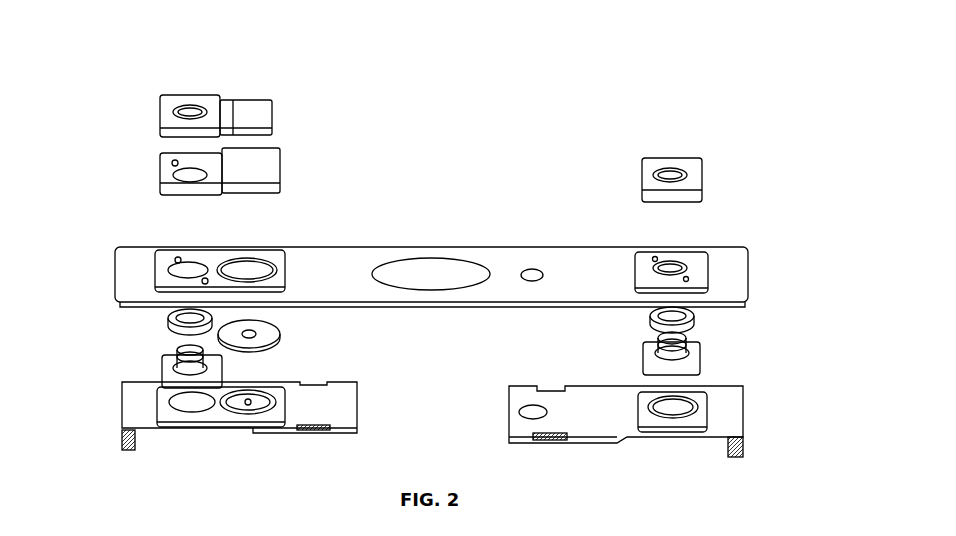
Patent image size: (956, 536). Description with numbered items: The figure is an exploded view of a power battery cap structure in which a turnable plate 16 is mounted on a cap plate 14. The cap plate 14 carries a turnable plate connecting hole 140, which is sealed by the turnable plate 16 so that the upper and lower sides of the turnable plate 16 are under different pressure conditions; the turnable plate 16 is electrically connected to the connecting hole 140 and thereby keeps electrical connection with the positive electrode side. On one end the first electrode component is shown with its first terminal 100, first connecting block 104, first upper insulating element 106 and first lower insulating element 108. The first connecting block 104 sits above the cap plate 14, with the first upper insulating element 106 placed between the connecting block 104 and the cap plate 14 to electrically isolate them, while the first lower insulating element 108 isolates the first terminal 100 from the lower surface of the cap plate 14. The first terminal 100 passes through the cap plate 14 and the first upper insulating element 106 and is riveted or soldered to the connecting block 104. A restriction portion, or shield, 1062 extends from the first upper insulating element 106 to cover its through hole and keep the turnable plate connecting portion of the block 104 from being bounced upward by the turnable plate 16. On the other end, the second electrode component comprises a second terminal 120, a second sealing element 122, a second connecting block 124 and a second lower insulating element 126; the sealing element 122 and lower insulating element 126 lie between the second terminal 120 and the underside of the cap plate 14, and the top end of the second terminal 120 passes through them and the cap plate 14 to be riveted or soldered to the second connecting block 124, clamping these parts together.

The cap plate 14 is at (360, 270).
The turnable plate 16 is at (273, 340).
The first terminal 100 is at (165, 367).
The first connecting block 104 is at (168, 102).
The first upper insulating element 106 is at (157, 148).
The restriction portion 1062 is at (267, 163).
The first lower insulating element 108 is at (145, 412).
The second terminal 120 is at (693, 352).
The second sealing element 122 is at (168, 315).
The second connecting block 124 is at (698, 175).
The second lower insulating element 126 is at (693, 418).
The turnable plate connecting hole 140 is at (250, 270).